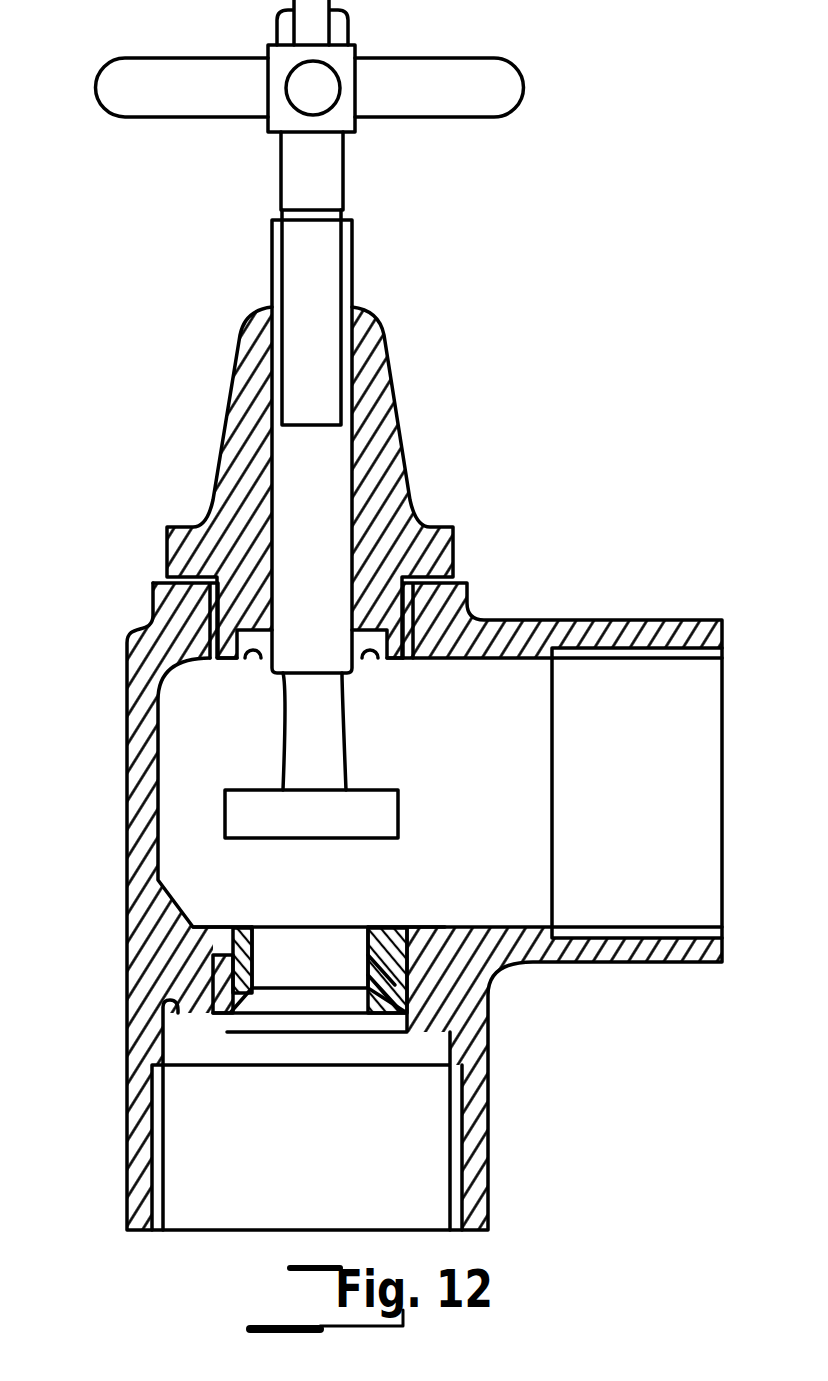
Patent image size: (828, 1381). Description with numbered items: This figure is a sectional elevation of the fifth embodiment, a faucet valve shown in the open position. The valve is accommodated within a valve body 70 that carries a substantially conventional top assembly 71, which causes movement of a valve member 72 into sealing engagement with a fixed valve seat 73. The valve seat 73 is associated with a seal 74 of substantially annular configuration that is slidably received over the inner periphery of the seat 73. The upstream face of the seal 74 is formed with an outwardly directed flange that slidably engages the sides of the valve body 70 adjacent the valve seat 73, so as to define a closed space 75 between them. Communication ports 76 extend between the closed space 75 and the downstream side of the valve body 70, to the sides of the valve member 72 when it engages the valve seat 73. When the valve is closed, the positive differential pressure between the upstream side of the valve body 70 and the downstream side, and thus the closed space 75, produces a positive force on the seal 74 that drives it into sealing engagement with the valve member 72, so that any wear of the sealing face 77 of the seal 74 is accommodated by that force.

The valve body 70 is at (553, 620).
The top assembly 71 is at (400, 477).
The valve member 72 is at (222, 827).
The valve seat 73 is at (212, 927).
The seal 74 is at (220, 1033).
The closed space 75 is at (220, 963).
The communication ports 76 is at (450, 1016).
The sealing face 77 is at (370, 927).